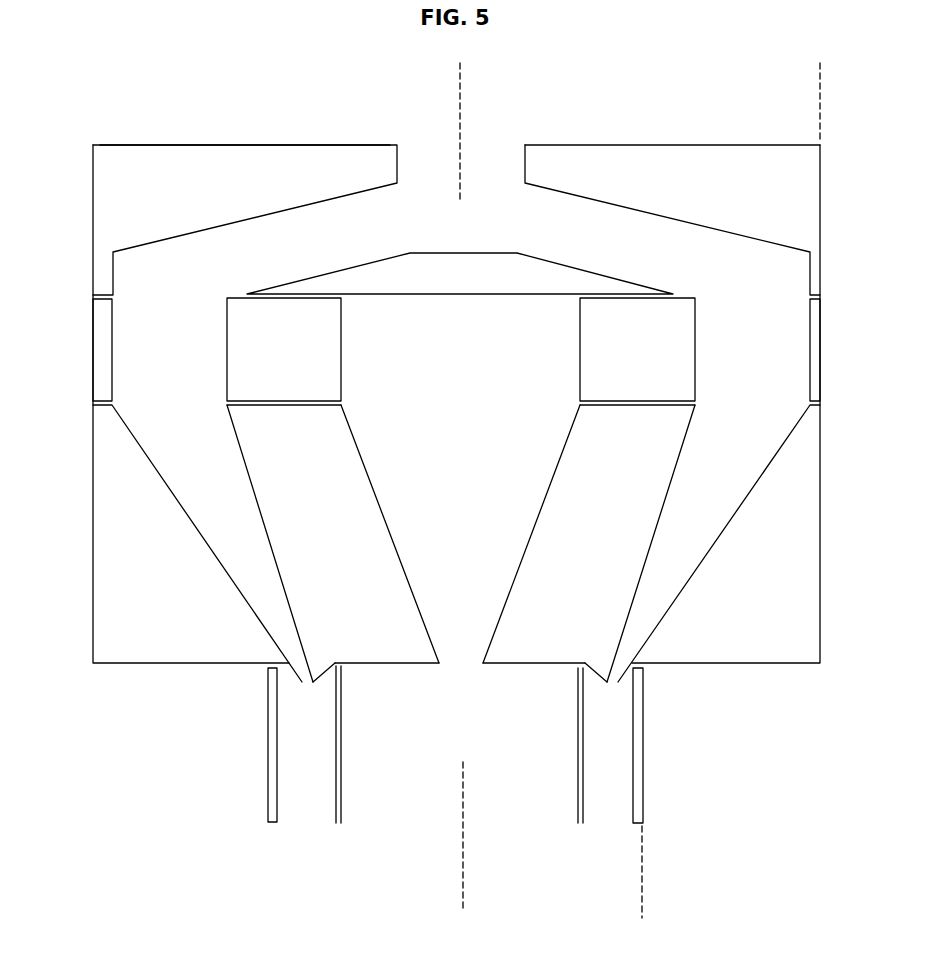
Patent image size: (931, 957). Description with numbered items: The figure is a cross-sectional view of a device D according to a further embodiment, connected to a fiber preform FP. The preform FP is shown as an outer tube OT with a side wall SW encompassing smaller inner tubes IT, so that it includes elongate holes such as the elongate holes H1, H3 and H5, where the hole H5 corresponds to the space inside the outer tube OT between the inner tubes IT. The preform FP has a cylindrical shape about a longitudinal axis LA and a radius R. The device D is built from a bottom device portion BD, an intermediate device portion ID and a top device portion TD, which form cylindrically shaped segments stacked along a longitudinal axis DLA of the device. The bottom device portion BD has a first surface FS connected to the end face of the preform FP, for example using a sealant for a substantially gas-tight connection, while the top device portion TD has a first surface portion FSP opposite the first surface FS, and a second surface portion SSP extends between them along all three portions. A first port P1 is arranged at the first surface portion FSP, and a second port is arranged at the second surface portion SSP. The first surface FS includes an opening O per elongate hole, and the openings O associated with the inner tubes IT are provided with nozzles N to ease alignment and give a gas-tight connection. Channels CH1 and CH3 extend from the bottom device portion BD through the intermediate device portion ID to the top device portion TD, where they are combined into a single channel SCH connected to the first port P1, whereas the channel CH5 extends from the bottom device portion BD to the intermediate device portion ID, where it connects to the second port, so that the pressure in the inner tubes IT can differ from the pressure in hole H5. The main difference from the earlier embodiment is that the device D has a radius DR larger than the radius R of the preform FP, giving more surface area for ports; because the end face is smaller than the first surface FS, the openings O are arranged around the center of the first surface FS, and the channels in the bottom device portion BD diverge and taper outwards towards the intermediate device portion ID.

The bottom device portion BD is at (800, 592).
The top device portion TD is at (798, 190).
The first surface portion FSP is at (183, 140).
The intermediate device portion ID is at (815, 355).
The second surface portion SSP is at (822, 452).
The single channel SCH is at (458, 223).
The first channel CH1 is at (208, 482).
The third channel CH3 is at (707, 493).
The fifth channel CH5 is at (433, 520).
The nozzle N is at (288, 675).
The opening O is at (307, 681).
The first surface FS is at (512, 665).
The side wall SW is at (268, 792).
The inner tube IT is at (342, 778).
The outer tube OT is at (645, 719).
The fiber preform FP is at (640, 765).
The elongate hole H1 is at (313, 779).
The elongate hole H3 is at (608, 804).
The elongate hole H5 is at (420, 813).
The first port P1 is at (425, 147).
The longitudinal axis of the device DLA is at (457, 155).
The radius of the device DR is at (818, 95).
The device D is at (65, 147).
The longitudinal axis LA is at (463, 878).
The radius R is at (640, 898).